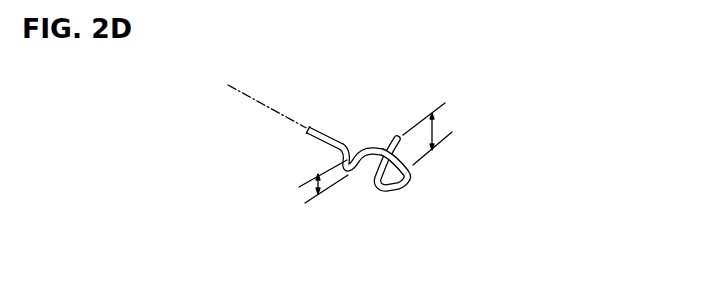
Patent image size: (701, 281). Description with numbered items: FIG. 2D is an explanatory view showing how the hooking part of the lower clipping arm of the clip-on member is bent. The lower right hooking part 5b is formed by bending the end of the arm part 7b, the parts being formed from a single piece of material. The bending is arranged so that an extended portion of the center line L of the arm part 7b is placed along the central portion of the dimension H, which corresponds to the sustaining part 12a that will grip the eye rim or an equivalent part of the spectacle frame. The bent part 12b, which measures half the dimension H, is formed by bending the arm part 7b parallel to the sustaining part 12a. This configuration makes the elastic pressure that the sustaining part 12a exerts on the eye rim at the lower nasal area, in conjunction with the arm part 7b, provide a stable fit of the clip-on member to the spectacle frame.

The lower right hooking part 5b is at (396, 159).
The arm part 7b is at (323, 119).
The sustaining part 12a is at (377, 191).
The bent part 12b is at (352, 148).
The center line L is at (256, 105).
The dimension H is at (436, 130).